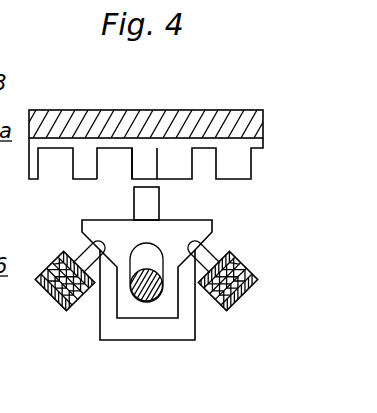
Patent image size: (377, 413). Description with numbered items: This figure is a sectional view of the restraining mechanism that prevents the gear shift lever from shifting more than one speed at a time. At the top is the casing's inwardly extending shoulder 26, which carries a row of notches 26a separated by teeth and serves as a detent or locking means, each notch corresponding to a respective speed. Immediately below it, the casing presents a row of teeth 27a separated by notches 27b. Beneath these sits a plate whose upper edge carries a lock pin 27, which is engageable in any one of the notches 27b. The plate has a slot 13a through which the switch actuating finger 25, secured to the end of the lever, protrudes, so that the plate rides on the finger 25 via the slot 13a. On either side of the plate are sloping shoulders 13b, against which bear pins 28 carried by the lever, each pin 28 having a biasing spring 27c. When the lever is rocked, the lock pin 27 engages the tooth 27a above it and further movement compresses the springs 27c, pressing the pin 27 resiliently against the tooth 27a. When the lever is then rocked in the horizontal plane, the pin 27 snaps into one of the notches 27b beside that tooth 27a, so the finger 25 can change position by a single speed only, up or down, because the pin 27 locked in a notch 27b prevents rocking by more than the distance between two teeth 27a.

The slot 13a is at (267, 231).
The sloping shoulders 13b is at (84, 237).
The switch actuating finger 25 is at (148, 302).
The shoulder 26 is at (263, 120).
The notches 26a is at (50, 236).
The lock pin 27 is at (160, 203).
The teeth 27a is at (148, 152).
The notches 27b is at (115, 160).
The biasing springs 27c is at (58, 303).
The pins 28 is at (62, 249).